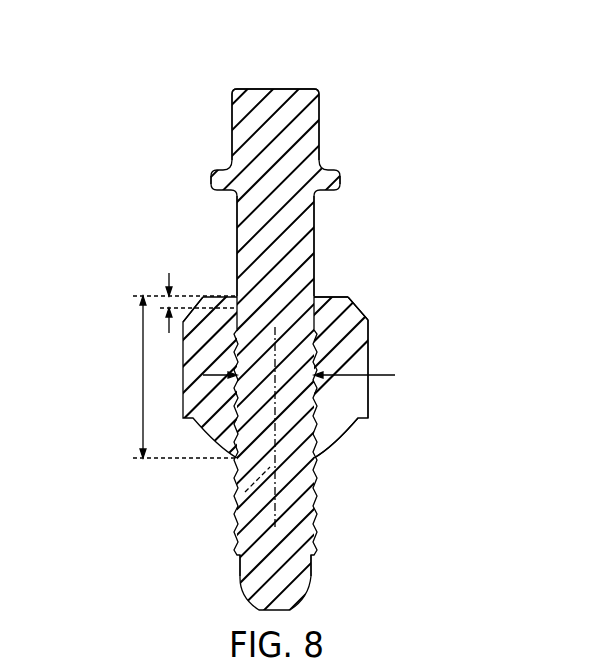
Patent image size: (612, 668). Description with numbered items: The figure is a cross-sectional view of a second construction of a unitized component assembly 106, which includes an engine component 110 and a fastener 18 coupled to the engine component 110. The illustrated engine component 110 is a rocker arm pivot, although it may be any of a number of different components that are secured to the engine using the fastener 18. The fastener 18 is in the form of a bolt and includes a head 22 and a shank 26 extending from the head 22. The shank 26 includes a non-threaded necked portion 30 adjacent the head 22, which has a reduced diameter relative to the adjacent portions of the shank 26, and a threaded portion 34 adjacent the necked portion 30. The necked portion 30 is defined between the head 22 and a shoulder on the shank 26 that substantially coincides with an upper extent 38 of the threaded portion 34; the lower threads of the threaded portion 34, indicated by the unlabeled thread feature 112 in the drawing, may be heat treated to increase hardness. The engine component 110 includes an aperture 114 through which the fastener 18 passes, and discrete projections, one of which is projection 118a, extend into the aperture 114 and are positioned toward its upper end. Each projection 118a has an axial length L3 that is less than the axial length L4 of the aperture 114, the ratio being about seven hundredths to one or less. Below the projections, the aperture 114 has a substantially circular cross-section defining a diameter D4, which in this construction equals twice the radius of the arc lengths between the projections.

The fastener 18 is at (361, 164).
The head 22 is at (245, 118).
The shank 26 is at (308, 227).
The necked portion 30 is at (237, 215).
The threaded portion 34 is at (315, 498).
The upper extent of the threaded portion 38 is at (318, 337).
The unitized component assembly 106 is at (472, 164).
The engine component 110 is at (362, 328).
The threads 112 is at (240, 490).
The aperture 114 is at (317, 393).
The projection 118a is at (237, 310).
The axial length of the projection L3 is at (169, 273).
The axial length of the aperture L4 is at (143, 378).
The diameter of the aperture D4 is at (375, 372).